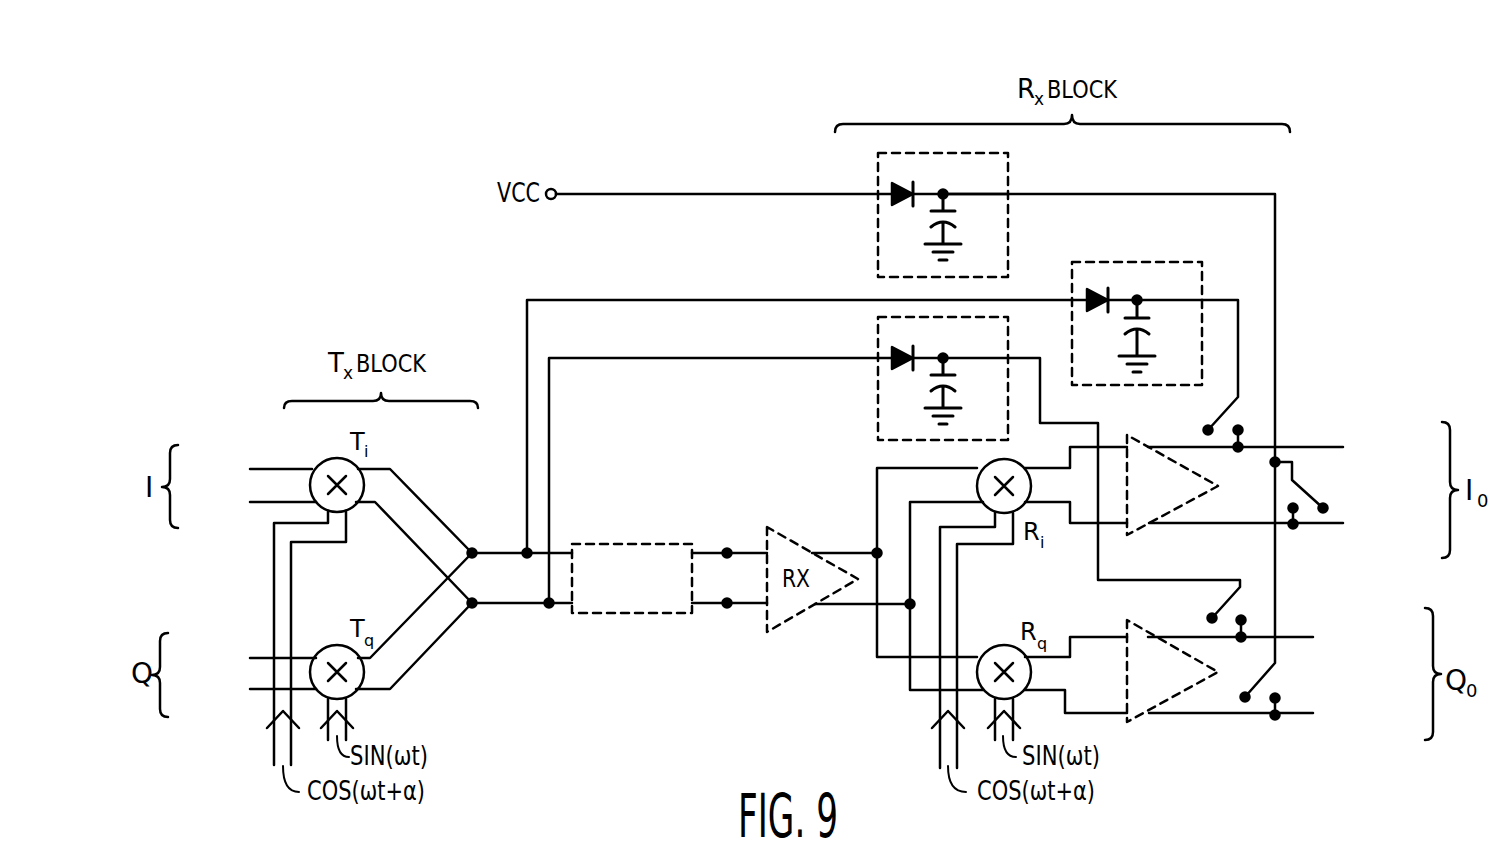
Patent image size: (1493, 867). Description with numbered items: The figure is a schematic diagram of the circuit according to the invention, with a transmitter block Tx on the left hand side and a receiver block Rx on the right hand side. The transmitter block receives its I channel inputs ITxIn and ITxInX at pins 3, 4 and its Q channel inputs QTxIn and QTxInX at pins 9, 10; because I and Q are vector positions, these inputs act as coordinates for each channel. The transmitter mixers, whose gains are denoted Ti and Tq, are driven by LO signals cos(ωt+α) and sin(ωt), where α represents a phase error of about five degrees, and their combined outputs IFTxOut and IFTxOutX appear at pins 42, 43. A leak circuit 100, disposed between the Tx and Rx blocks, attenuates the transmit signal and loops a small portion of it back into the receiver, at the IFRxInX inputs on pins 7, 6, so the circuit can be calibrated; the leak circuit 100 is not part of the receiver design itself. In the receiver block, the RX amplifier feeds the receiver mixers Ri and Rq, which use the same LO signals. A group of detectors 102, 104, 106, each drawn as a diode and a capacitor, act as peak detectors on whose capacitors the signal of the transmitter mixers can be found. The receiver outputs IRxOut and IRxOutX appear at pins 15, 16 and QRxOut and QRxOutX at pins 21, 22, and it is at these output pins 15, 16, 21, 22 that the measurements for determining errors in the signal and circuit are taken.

The pin 3 is at (251, 469).
The pin 4 is at (248, 502).
The pin 9 is at (251, 658).
The pin 10 is at (242, 689).
The IFTXOUT output pin 42 is at (507, 517).
The IFTXOUTX output pin 43 is at (504, 640).
The IFRXINX input pin 7 is at (729, 524).
The IFRXINX input pin 6 is at (729, 633).
The pin 15 is at (1291, 447).
The pin 16 is at (1296, 523).
The pin 21 is at (1280, 637).
The pin 22 is at (1286, 714).
The leak circuit 100 is at (616, 614).
The detector 102 is at (877, 323).
The detector 104 is at (1132, 262).
The detector 106 is at (878, 160).